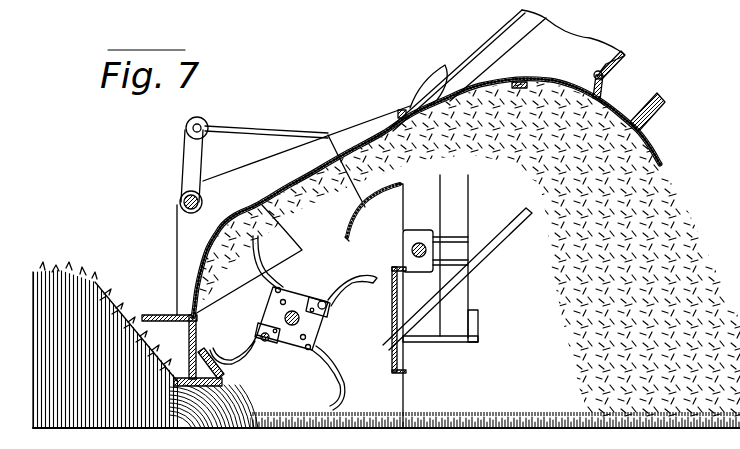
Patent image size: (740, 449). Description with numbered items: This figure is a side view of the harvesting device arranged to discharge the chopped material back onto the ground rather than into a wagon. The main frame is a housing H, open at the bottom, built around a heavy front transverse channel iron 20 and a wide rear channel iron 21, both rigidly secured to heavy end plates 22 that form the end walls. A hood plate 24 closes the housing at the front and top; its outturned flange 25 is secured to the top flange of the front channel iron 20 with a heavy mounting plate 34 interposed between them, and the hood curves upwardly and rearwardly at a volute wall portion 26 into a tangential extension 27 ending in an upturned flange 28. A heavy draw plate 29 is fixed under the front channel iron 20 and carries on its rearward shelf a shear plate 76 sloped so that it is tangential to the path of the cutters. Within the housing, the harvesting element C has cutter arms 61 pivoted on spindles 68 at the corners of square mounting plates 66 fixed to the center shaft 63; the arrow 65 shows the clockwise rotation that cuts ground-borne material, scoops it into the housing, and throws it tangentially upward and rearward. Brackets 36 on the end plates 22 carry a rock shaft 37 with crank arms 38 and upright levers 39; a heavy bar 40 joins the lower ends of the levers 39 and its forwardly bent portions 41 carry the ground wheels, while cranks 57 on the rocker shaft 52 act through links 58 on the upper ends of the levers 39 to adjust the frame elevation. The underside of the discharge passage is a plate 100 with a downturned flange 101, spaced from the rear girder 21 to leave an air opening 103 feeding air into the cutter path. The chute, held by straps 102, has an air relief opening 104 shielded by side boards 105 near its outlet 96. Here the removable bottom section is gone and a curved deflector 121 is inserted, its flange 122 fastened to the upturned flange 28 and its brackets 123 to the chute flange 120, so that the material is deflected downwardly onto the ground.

The transverse channel iron 20 is at (188, 342).
The transverse channel iron 21 is at (392, 313).
The end plate 22 is at (177, 218).
The hood plate 24 is at (397, 198).
The outturned flange 25 is at (180, 314).
The curved wall portion 26 is at (397, 198).
The tangential extension 27 is at (351, 150).
The upturned flange 28 is at (402, 110).
The draw plate 29 is at (205, 387).
The mounting plate 34 is at (143, 312).
The bracket 36 is at (402, 245).
The rock shaft 37 is at (457, 279).
The crank arm 38 is at (448, 262).
The upright lever 39 is at (453, 193).
The bar 40 is at (478, 324).
The forwardly extending portion 41 is at (430, 342).
The rocker shaft 52 is at (180, 200).
The crank 57 is at (183, 152).
The link 58 is at (258, 132).
The cutter arm 61 is at (257, 258).
The center shaft 63 is at (295, 313).
The arrow 65 is at (283, 322).
The mounting plate 66 is at (308, 358).
The spindle 68 is at (265, 341).
The shear plate 76 is at (208, 358).
The chute outlet 96 is at (502, 8).
The plate 100 is at (331, 134).
The downturned flange 101 is at (373, 212).
The strap 102 is at (656, 122).
The air opening 103 is at (414, 221).
The air relief opening 104 is at (493, 39).
The side board 105 is at (530, 22).
The flange 120 is at (604, 82).
The deflector 121 is at (526, 80).
The flange 122 is at (445, 65).
The bracket 123 is at (593, 82).
The harvesting element C is at (295, 365).
The housing H is at (345, 275).